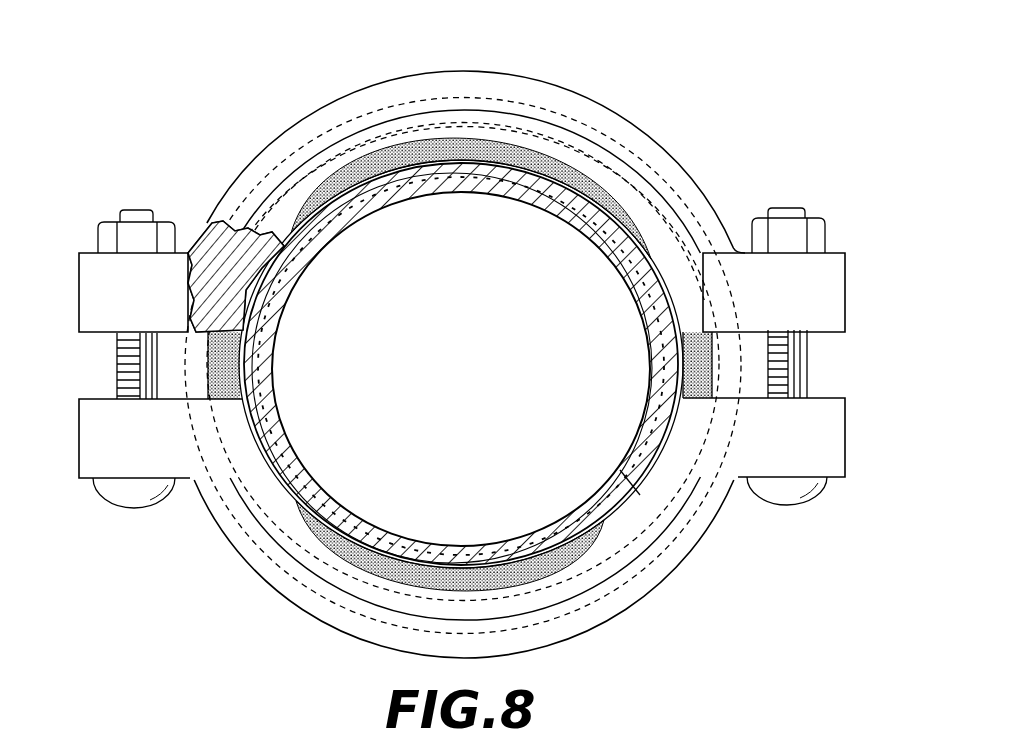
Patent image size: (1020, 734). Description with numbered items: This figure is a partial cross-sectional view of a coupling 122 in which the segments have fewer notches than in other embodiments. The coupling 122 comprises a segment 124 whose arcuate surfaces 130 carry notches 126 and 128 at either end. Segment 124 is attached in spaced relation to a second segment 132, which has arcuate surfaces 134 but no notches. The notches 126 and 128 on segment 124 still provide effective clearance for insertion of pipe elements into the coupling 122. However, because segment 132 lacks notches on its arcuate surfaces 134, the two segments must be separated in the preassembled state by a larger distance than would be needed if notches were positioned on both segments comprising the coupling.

The coupling 122 is at (742, 170).
The segment 124 is at (582, 112).
The notch 126 is at (275, 310).
The notch 128 is at (645, 306).
The arcuate surfaces 130 is at (472, 140).
The segment 132 is at (630, 592).
The arcuate surfaces 134 is at (496, 570).